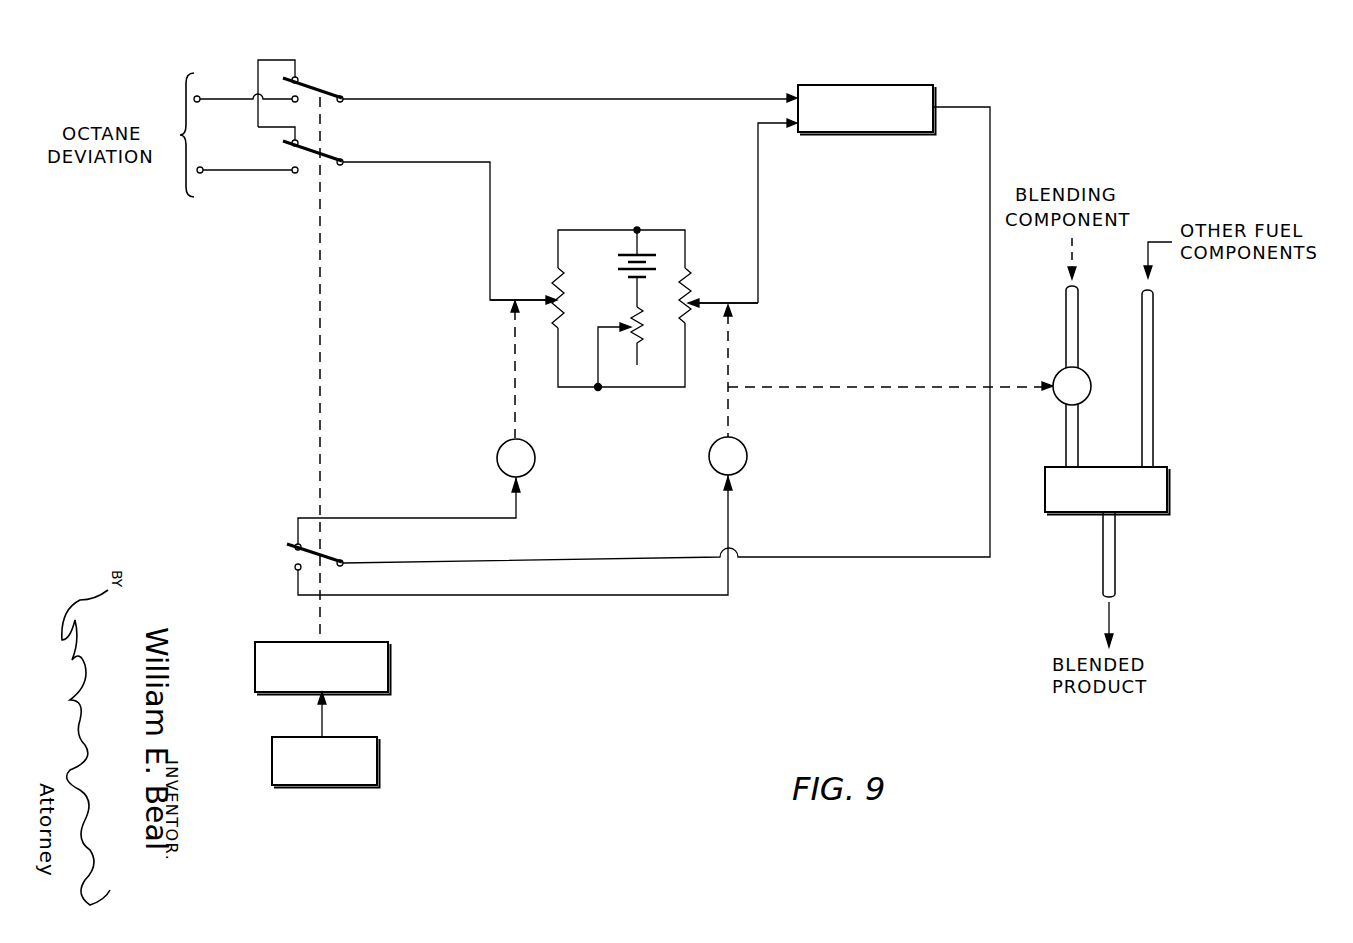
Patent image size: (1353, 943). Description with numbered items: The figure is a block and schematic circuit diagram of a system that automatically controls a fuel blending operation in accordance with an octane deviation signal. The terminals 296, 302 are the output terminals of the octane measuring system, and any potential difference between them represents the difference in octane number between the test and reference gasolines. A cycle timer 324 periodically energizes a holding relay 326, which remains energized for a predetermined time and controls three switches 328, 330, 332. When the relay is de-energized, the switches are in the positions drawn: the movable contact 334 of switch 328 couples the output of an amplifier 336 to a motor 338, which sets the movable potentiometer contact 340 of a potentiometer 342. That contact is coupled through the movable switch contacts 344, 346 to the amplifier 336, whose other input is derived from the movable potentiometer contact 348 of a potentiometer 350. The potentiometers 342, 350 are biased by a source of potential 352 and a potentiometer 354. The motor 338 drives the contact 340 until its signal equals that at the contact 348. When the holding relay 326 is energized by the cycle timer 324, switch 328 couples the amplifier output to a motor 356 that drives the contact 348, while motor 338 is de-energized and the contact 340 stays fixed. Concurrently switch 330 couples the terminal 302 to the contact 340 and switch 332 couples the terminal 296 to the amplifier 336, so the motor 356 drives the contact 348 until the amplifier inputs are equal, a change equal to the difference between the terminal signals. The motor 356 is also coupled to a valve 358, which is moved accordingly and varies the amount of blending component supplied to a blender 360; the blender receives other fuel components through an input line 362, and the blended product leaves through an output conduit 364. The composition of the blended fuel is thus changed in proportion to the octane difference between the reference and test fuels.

The terminal 296 is at (200, 96).
The terminal 302 is at (200, 167).
The movable switch contact 346 is at (309, 84).
The switch 332 is at (320, 85).
The movable switch contact 344 is at (318, 152).
The switch 330 is at (338, 149).
The amplifier 336 is at (893, 60).
The potentiometer 342 is at (556, 275).
The movable potentiometer contact 340 is at (549, 298).
The source of potential 352 is at (618, 261).
The movable potentiometer contact 348 is at (697, 300).
The potentiometer 350 is at (688, 315).
The potentiometer 354 is at (631, 327).
The motor 338 is at (533, 469).
The motor 356 is at (746, 467).
The valve 358 is at (1058, 374).
The input line 362 is at (1153, 376).
The blender 360 is at (1132, 466).
The output conduit 364 is at (1116, 548).
The switch 328 is at (327, 549).
The movable contact 334 is at (290, 550).
The holding relay 326 is at (390, 656).
The cycle timer 324 is at (378, 747).